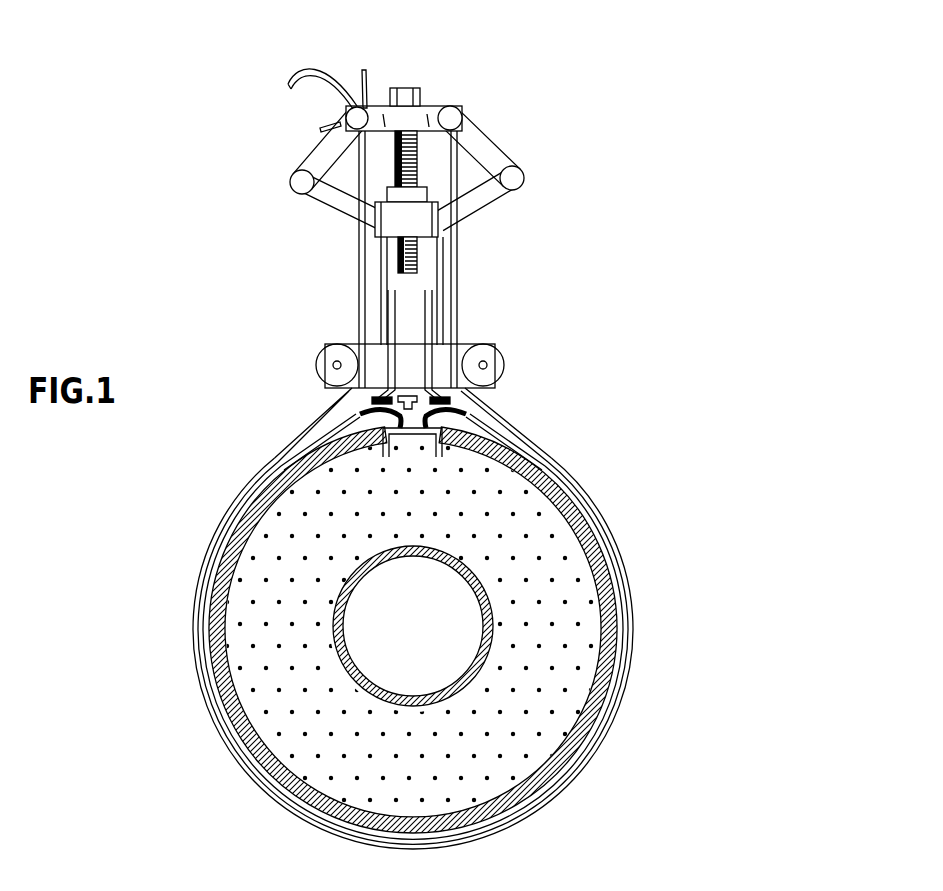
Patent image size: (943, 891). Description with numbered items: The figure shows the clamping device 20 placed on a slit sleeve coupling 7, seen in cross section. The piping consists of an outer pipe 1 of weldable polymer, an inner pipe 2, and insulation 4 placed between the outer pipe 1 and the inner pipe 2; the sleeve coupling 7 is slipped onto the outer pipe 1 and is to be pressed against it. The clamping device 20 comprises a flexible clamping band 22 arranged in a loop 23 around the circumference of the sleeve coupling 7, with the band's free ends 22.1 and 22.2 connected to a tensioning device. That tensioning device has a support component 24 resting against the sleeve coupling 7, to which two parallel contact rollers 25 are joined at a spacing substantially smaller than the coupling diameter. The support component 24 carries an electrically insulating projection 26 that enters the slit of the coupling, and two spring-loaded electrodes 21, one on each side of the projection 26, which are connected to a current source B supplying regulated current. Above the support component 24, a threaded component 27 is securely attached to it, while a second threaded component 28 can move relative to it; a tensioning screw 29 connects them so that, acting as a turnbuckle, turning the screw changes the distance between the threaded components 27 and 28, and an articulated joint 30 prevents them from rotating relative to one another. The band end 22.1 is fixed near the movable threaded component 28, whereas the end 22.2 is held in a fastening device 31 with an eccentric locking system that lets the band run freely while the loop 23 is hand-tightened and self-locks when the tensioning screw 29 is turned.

The outer pipe 1 is at (212, 637).
The inner pipe 2 is at (343, 622).
The insulation 4 is at (567, 598).
The sleeve coupling 7 is at (220, 548).
The clamping device 20 is at (260, 222).
The electrodes 21 is at (343, 407).
The clamping band 22 is at (458, 323).
The clamping band free end 22.1 is at (448, 170).
The clamping band free end 22.2 is at (309, 64).
The loop 23 is at (537, 818).
The support component 24 is at (466, 408).
The contact rollers 25 is at (318, 355).
The projection 26 is at (470, 414).
The threaded component 27 is at (418, 218).
The threaded component 28 is at (416, 110).
The tensioning screw 29 is at (418, 157).
The articulated joint 30 is at (330, 148).
The fastening device 31 is at (364, 72).
The current source B is at (345, 405).